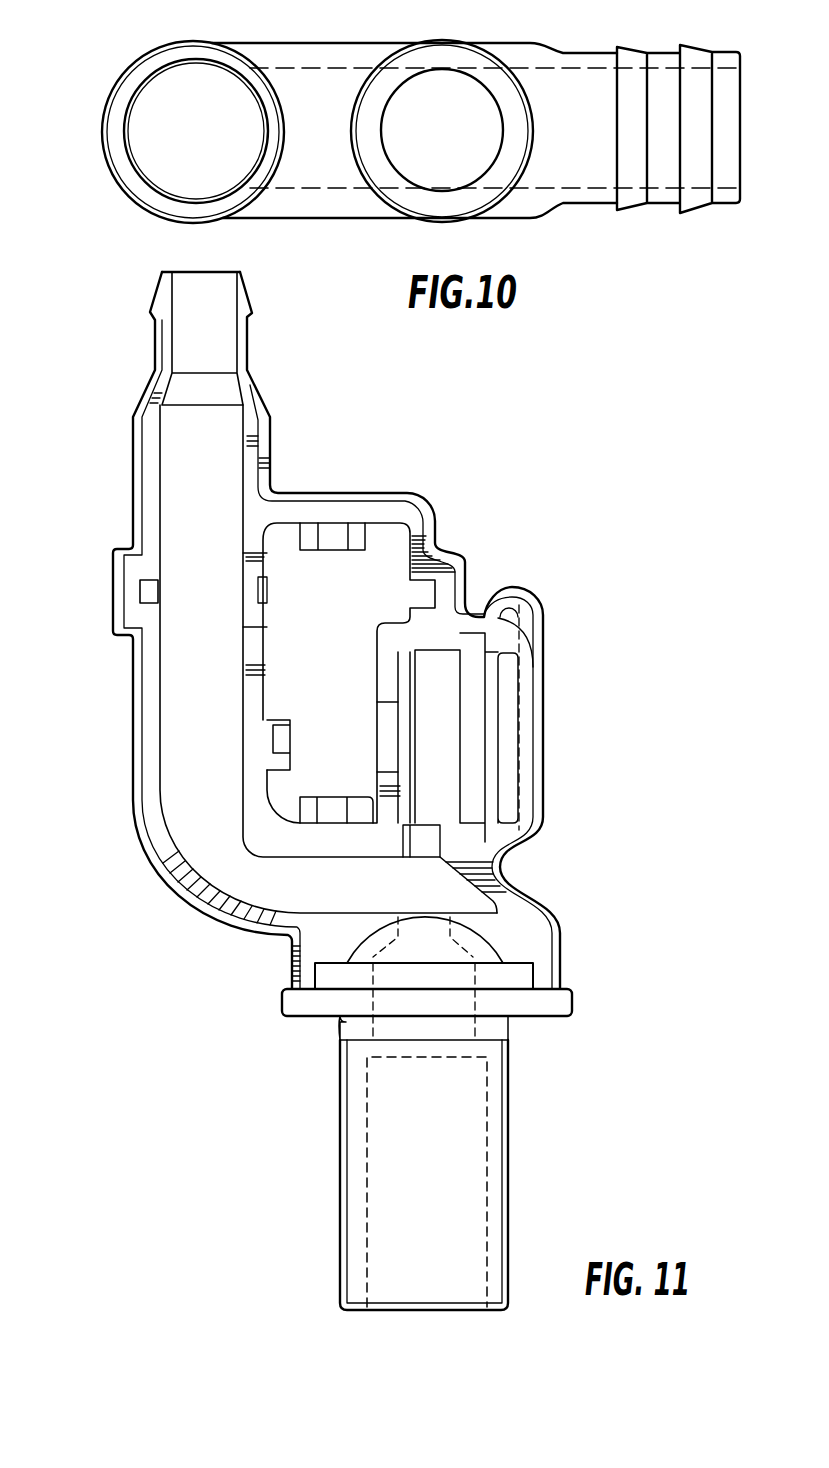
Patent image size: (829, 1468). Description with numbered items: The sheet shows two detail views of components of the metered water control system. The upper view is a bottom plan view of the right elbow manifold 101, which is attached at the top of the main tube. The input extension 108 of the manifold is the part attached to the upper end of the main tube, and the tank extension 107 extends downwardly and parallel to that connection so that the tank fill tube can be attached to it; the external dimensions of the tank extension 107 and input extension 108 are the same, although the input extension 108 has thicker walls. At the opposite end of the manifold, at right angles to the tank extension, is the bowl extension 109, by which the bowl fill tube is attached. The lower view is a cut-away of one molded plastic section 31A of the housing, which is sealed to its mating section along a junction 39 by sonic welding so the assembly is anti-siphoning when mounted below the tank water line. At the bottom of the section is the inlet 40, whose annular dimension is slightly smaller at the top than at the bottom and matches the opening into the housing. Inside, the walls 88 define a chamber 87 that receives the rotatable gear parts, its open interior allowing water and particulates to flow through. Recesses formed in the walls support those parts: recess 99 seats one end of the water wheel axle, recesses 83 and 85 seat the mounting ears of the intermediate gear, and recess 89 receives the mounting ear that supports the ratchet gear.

In FIG. 10, the right elbow manifold 101 is at (125, 57).
In FIG. 10, the tank extension 107 is at (162, 198).
In FIG. 10, the input extension 108 is at (417, 200).
In FIG. 10, the bowl extension 109 is at (642, 193).
In FIG. 11, the housing section 31A is at (180, 908).
In FIG. 11, the junction 39 is at (288, 972).
In FIG. 11, the inlet 40 is at (412, 1285).
In FIG. 11, the recess 83 is at (337, 540).
In FIG. 11, the recess 85 is at (300, 803).
In FIG. 11, the chamber 87 is at (350, 648).
In FIG. 11, the wall 88 is at (243, 750).
In FIG. 11, the recess 89 is at (273, 737).
In FIG. 11, the recess 99 is at (153, 595).